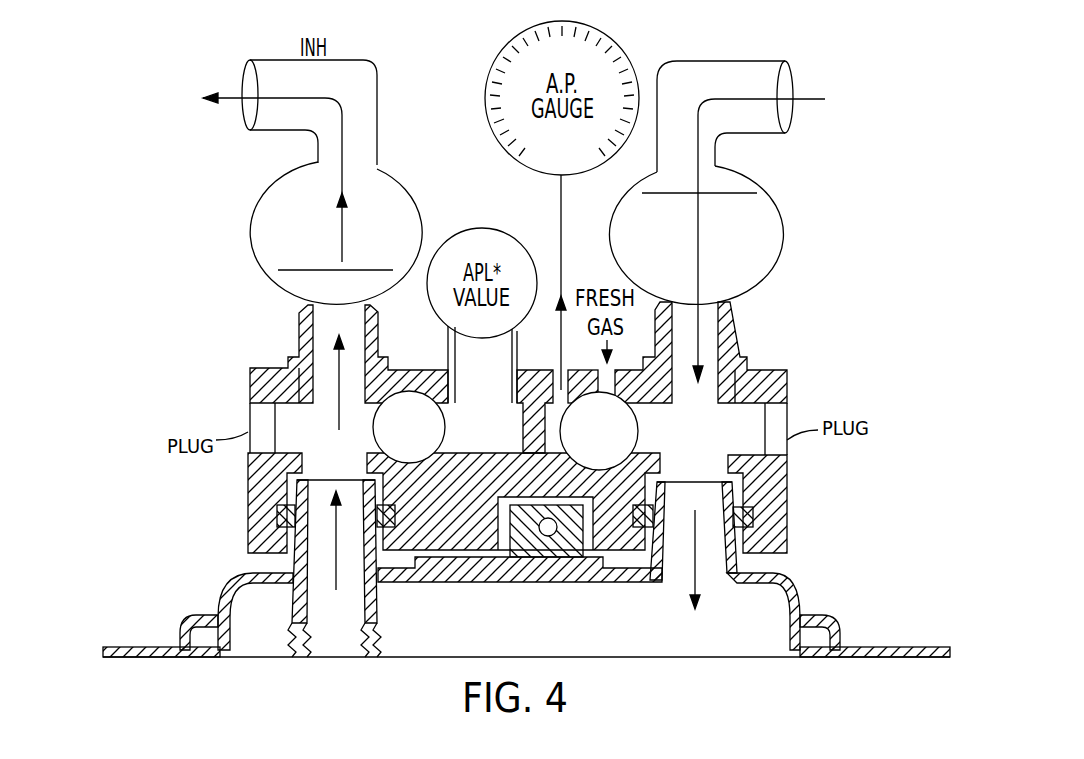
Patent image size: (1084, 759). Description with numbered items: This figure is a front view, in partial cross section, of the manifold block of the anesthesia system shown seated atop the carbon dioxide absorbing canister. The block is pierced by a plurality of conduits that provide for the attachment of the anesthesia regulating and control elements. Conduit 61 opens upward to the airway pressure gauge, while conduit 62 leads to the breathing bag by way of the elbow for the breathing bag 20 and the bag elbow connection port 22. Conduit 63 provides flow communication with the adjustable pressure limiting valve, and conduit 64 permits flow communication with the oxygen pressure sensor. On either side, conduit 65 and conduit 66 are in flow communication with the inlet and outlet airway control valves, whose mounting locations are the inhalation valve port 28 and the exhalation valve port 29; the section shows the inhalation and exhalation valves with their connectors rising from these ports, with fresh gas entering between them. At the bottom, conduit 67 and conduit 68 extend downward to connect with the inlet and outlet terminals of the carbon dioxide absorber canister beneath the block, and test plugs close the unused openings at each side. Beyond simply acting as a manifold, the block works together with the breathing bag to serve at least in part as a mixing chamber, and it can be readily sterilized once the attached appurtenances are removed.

The elbow for breathing bag 20 is at (636, 424).
The bag elbow connection port 22 is at (630, 450).
The inhalation valve port 28 is at (302, 350).
The exhalation valve port 29 is at (722, 330).
The conduit 61 is at (558, 378).
The conduit 62 is at (613, 468).
The conduit 63 is at (455, 380).
The conduit 64 is at (417, 391).
The conduit 65 is at (363, 395).
The conduit 66 is at (718, 395).
The conduit 67 is at (722, 466).
The conduit 68 is at (382, 535).